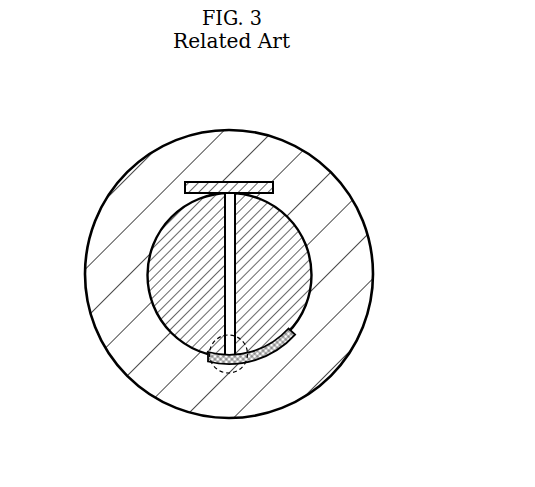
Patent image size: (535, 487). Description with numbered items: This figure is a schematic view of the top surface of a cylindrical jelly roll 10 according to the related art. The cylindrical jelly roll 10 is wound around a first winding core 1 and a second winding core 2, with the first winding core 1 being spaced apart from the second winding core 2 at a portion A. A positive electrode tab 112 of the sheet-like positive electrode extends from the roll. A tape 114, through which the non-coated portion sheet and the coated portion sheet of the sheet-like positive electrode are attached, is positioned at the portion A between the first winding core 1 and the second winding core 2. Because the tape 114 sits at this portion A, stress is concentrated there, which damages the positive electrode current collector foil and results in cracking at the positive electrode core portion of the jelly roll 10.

The cylindrical jelly roll 10 is at (115, 86).
The first winding core 1 is at (178, 251).
The second winding core 2 is at (280, 252).
The positive electrode tab 112 is at (229, 184).
The tape 114 is at (291, 341).
The portion where the first winding core is spaced apart from the second winding cor A is at (238, 369).